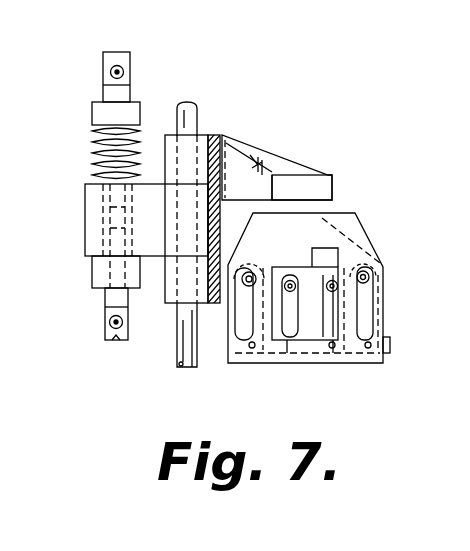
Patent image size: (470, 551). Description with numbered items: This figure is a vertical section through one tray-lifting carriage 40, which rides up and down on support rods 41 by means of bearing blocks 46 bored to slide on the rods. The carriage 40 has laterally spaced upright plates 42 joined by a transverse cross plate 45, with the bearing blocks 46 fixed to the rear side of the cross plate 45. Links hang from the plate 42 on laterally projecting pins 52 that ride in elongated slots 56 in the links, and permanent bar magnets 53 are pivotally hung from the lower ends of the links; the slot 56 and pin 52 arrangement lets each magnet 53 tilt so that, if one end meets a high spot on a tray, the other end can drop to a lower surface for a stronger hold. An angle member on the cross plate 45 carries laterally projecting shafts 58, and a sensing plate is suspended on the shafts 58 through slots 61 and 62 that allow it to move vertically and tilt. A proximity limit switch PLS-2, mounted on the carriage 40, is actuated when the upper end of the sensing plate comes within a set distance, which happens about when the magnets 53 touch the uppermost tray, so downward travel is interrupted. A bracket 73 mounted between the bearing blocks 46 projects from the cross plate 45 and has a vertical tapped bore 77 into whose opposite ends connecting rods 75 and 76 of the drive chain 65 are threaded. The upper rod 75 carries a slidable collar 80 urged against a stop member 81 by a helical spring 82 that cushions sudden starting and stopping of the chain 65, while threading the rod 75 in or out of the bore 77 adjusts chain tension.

The carriage 40 is at (362, 181).
The support rods 41 is at (177, 355).
The upright plate 42 is at (325, 213).
The cross plate 45 is at (205, 338).
The bearing block 46 is at (204, 133).
The pins 52 is at (332, 281).
The permanent bar magnets 53 is at (393, 347).
The elongated slots 56 is at (288, 353).
The shafts 58 is at (248, 272).
The slot 61 is at (362, 317).
The slot 62 is at (250, 347).
The drive chain 65 is at (124, 56).
The bracket 73 is at (223, 187).
The connecting rod 75 is at (178, 110).
The connecting rod 76 is at (107, 297).
The tapped bore 77 is at (117, 194).
The slidable collar 80 is at (141, 127).
The stop member 81 is at (110, 97).
The helical spring 82 is at (150, 143).
The proximity limit switch PLS-2 is at (350, 128).